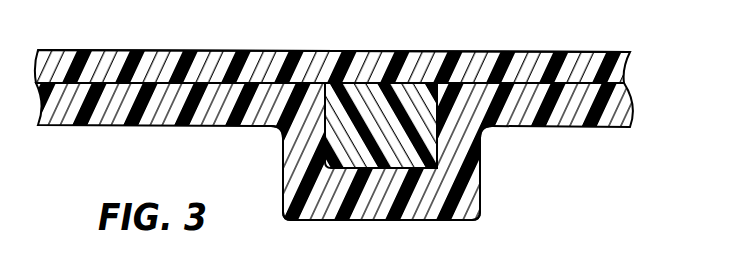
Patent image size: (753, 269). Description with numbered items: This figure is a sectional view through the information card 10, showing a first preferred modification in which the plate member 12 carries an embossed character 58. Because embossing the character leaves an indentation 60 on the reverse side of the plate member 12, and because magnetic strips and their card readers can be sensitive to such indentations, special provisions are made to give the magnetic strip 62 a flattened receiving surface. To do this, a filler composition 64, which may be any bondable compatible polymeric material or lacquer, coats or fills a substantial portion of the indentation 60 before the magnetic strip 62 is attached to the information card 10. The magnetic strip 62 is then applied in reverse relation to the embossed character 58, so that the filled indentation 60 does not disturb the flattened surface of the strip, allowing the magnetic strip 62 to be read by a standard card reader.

The information card 10 is at (78, 165).
The plate member 12 is at (645, 118).
The embossed character 58 is at (300, 220).
The indentation 60 is at (361, 172).
The magnetic strip 62 is at (630, 68).
The filler composition 64 is at (437, 167).